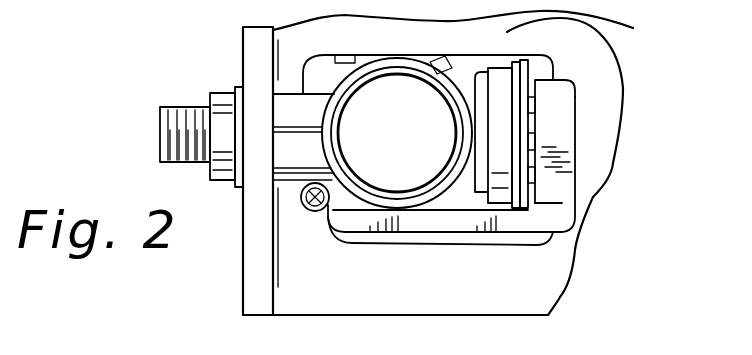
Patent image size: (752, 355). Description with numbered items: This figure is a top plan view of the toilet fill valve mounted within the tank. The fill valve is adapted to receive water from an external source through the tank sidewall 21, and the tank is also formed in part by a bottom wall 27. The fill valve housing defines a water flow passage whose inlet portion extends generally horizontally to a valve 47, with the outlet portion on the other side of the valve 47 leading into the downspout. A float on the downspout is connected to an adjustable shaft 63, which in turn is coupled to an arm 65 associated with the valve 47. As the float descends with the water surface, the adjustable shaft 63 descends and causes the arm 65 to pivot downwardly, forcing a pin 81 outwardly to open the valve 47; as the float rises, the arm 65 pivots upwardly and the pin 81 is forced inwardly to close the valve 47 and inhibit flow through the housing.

The sidewall 21 is at (247, 62).
The bottom wall 27 is at (454, 163).
The valve 47 is at (503, 90).
The pin 81 is at (535, 130).
The adjustable shaft 63 is at (313, 205).
The arm 65 is at (462, 222).